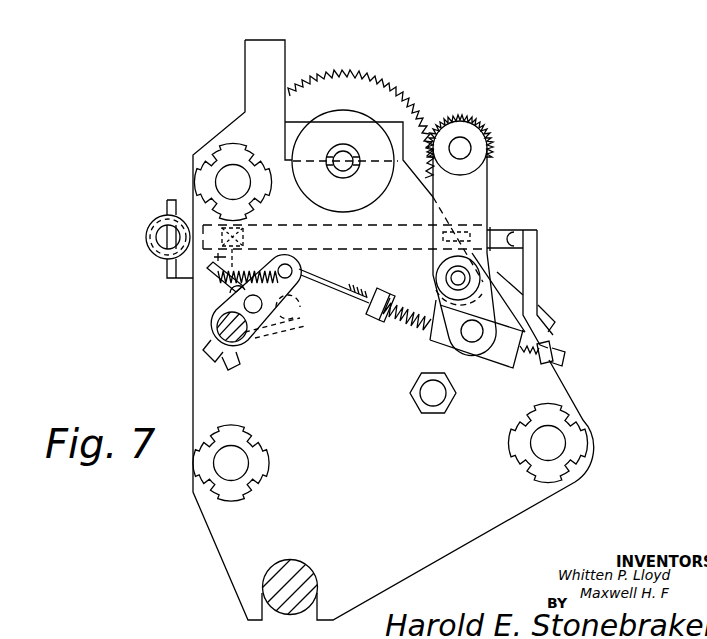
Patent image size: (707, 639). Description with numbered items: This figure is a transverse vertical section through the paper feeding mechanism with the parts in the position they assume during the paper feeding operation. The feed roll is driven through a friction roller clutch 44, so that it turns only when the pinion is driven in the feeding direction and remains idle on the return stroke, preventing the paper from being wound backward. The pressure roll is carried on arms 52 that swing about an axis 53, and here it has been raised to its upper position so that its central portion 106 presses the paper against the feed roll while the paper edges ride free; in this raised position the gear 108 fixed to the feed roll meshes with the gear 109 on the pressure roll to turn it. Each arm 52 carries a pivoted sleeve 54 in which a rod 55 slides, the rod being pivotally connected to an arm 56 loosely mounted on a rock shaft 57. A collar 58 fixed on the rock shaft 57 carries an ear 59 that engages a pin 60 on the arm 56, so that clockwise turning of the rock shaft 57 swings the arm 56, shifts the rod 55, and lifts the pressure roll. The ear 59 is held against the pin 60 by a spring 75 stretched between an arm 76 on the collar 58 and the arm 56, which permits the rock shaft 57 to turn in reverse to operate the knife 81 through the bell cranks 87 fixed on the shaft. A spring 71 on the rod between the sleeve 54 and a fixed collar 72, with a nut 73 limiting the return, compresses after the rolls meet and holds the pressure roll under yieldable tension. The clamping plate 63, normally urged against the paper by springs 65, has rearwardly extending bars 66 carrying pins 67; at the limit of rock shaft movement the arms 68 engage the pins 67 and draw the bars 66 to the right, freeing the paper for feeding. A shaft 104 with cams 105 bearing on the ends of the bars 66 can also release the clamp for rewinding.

The friction roller clutch 44 is at (326, 124).
The arms 52 is at (478, 191).
The axis 53 is at (455, 284).
The pivoted sleeve 54 is at (497, 350).
The rod 55 is at (306, 291).
The arm 56 is at (301, 272).
The rock shaft 57 is at (228, 323).
The collar 58 is at (246, 331).
The ear 59 is at (243, 300).
The pin 60 is at (297, 312).
The clamping plate 63 is at (466, 250).
The springs 65 is at (503, 238).
The bars 66 is at (402, 236).
The pin 67 is at (253, 236).
The arms 68 is at (222, 257).
The spring 71 is at (408, 322).
The fixed collar 72 is at (381, 290).
The nut 73 is at (545, 358).
The spring 75 is at (263, 278).
The arm 76 is at (220, 270).
The knife 81 is at (540, 315).
The bell cranks 87 is at (292, 325).
The shaft 104 is at (158, 237).
The cams 105 is at (163, 214).
The central portion 106 is at (490, 138).
The gear 108 is at (352, 92).
The gear 109 is at (488, 106).